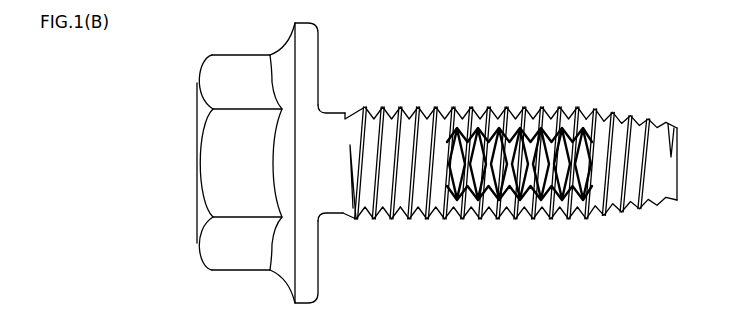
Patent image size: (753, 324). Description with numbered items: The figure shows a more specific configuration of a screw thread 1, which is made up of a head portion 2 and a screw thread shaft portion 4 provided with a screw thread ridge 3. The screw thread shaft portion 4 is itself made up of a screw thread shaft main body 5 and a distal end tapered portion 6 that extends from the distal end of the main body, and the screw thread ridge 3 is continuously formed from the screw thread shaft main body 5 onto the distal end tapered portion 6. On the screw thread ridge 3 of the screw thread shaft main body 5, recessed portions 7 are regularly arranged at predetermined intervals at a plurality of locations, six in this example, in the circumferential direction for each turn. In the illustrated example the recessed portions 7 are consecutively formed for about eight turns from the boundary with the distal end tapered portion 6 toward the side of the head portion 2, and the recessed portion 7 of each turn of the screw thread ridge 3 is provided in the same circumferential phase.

The screw thread 1 is at (529, 96).
The head portion 2 is at (200, 253).
The screw thread ridge 3 is at (383, 110).
The screw thread shaft portion 4 is at (427, 219).
The screw thread shaft main body 5 is at (385, 214).
The distal end tapered portion 6 is at (674, 228).
The recessed portion 7 is at (484, 190).